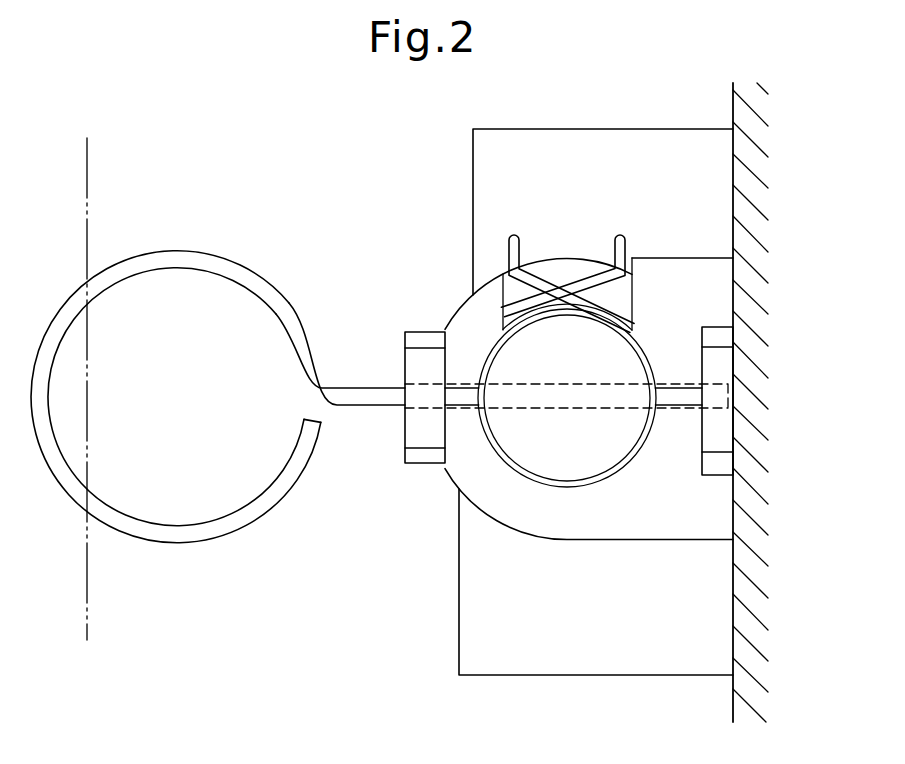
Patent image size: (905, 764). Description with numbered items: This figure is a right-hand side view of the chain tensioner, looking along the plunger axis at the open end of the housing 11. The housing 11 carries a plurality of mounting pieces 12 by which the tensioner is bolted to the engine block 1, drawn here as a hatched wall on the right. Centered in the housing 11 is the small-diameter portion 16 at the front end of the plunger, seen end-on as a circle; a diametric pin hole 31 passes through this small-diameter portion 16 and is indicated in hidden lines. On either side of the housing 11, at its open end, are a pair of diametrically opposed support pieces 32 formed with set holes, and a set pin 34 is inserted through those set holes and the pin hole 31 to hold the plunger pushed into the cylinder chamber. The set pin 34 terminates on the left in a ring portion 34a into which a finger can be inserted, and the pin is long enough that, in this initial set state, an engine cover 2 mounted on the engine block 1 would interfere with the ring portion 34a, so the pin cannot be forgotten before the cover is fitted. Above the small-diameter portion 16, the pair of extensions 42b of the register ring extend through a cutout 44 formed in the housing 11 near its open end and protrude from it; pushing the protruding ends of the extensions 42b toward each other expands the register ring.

The engine block 1 is at (743, 115).
The engine cover 2 is at (75, 605).
The housing 11 is at (458, 300).
The mounting pieces 12 is at (482, 153).
The small-diameter portion 16 is at (545, 460).
The pin hole 31 is at (573, 407).
The support pieces 32 is at (415, 428).
The set pin 34 is at (368, 383).
The ring portion 34a is at (177, 258).
The extensions 42b is at (508, 238).
The cutout 44 is at (563, 275).